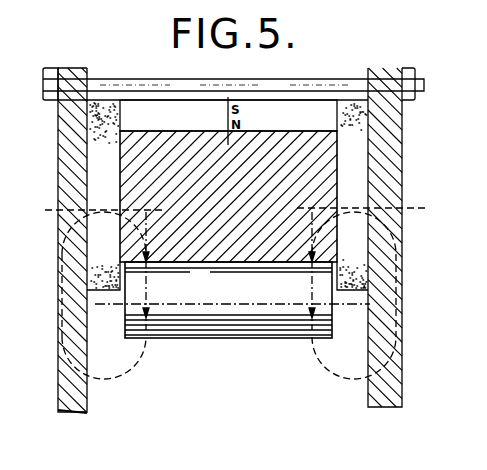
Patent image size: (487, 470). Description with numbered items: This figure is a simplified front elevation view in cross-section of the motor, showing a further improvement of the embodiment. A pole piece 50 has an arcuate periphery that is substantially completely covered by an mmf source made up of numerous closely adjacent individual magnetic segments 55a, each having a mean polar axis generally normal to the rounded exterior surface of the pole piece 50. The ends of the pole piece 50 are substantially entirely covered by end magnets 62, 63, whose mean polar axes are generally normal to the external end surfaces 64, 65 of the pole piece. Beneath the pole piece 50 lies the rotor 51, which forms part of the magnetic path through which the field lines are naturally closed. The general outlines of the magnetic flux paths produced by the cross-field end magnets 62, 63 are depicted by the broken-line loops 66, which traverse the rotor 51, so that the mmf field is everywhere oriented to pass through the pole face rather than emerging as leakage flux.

The pole piece 50 is at (241, 200).
The rotor 51 is at (227, 328).
The magnetic segment 55a is at (310, 115).
The end magnet 62 is at (360, 151).
The end magnet 63 is at (97, 170).
The external end surface 64 is at (118, 249).
The external end surface 65 is at (336, 247).
The broken-line loop 66 is at (133, 369).